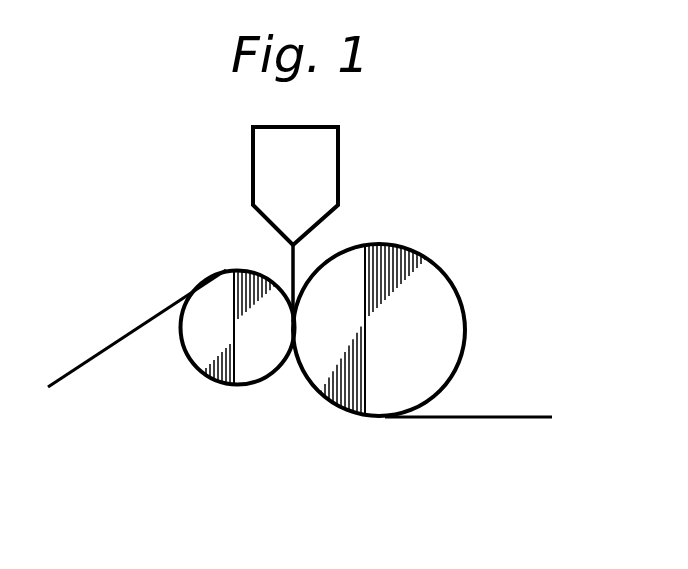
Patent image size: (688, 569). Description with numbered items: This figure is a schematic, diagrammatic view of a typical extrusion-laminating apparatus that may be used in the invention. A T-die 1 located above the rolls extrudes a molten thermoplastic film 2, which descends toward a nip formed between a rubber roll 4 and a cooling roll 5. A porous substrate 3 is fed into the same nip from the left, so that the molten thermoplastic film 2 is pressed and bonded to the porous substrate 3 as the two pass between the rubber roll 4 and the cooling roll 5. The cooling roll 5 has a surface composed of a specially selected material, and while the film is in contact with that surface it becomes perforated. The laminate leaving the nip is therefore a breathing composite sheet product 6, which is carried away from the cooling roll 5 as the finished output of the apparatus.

The T-die 1 is at (339, 158).
The molten thermoplastic film 2 is at (295, 262).
The porous substrate 3 is at (108, 348).
The rubber roll 4 is at (215, 292).
The cooling roll 5 is at (438, 295).
The breathing composite sheet product 6 is at (492, 415).